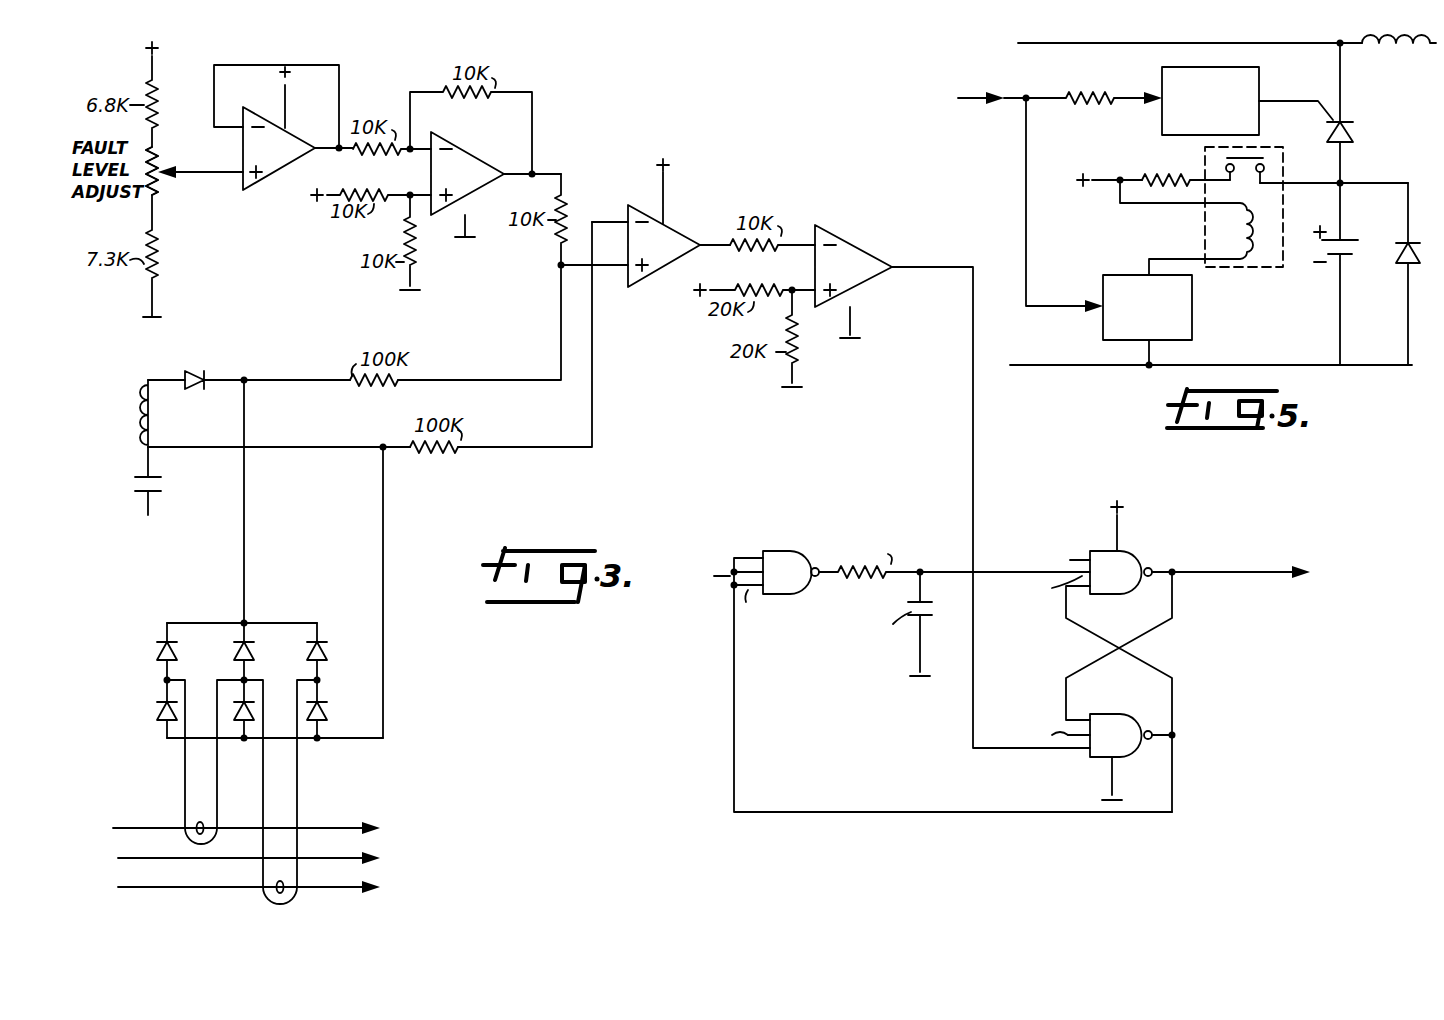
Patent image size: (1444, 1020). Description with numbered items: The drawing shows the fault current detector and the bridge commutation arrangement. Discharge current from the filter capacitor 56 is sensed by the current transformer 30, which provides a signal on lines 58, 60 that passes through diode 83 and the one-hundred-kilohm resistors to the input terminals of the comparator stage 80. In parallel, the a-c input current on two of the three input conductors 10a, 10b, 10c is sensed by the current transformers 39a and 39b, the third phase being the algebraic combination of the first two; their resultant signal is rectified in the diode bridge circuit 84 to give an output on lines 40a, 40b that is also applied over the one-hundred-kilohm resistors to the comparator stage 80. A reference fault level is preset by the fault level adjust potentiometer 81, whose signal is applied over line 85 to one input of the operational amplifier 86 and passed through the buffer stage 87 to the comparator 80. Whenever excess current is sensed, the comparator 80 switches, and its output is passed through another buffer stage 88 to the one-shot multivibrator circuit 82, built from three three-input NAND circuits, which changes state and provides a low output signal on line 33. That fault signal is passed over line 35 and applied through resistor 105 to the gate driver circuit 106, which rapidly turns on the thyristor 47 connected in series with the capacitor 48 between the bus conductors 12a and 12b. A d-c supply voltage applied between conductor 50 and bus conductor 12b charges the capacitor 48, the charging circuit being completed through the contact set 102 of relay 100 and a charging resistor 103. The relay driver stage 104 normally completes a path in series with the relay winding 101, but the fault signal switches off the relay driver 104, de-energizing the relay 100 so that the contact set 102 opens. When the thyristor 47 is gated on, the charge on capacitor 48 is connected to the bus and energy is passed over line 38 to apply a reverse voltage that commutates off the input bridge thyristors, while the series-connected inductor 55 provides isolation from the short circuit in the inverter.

In FIG. 3, the fault level adjust potentiometer 81 is at (158, 164).
In FIG. 3, the line 85 is at (202, 174).
In FIG. 3, the operational amplifier 86 is at (278, 192).
In FIG. 3, the buffer stage 87 is at (462, 149).
In FIG. 3, the comparator stage 80 is at (663, 288).
In FIG. 3, the buffer stage 88 is at (842, 238).
In FIG. 3, the current transformer 30 is at (136, 405).
In FIG. 3, the line 58 is at (168, 378).
In FIG. 3, the diode 83 is at (198, 386).
In FIG. 3, the line 60 is at (182, 447).
In FIG. 3, the capacitor 56 is at (130, 490).
In FIG. 3, the line 40a is at (244, 574).
In FIG. 3, the line 40b is at (383, 578).
In FIG. 3, the diode bridge circuit 84 is at (150, 682).
In FIG. 3, the current transformer 39a is at (184, 840).
In FIG. 3, the current transformer 39b is at (290, 906).
In FIG. 3, the input conductor 10a is at (130, 824).
In FIG. 3, the input conductor 10b is at (120, 858).
In FIG. 3, the input conductor 10c is at (114, 890).
In FIG. 3, the one-shot multivibrator circuit 82 is at (892, 753).
In FIG. 3, the output line 33 is at (1260, 570).
In FIG. 5, the line 35 is at (984, 102).
In FIG. 5, the resistor 105 is at (1098, 90).
In FIG. 5, the gate driver circuit 106 is at (1160, 125).
In FIG. 5, the resistor 103 is at (1178, 174).
In FIG. 5, the contact set 102 is at (1266, 174).
In FIG. 5, the winding 101 is at (1240, 236).
In FIG. 5, the relay 100 is at (1275, 270).
In FIG. 5, the relay driver stage 104 is at (1194, 331).
In FIG. 5, the bus conductor 12a is at (1324, 46).
In FIG. 5, the bus conductor 12b is at (1370, 366).
In FIG. 5, the line 38 is at (1342, 88).
In FIG. 5, the thyristor 47 is at (1356, 136).
In FIG. 5, the conductor 50 is at (1296, 184).
In FIG. 5, the capacitor 48 is at (1360, 256).
In FIG. 5, the inductor 55 is at (1402, 50).